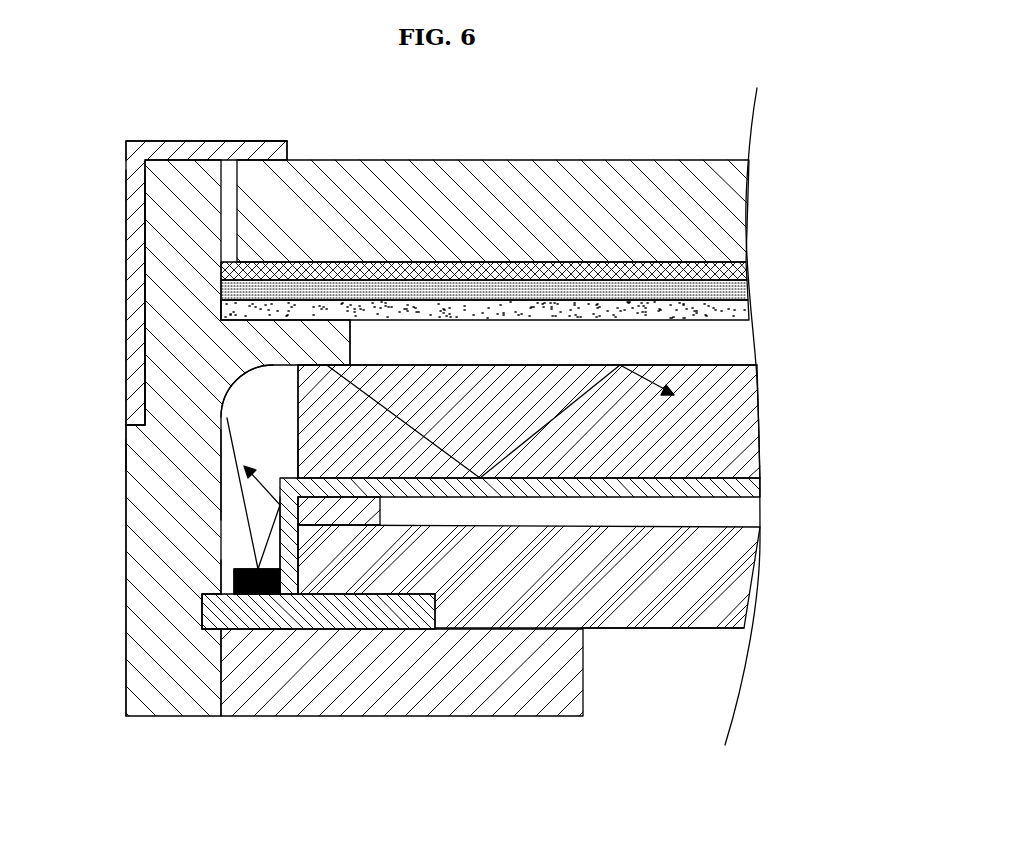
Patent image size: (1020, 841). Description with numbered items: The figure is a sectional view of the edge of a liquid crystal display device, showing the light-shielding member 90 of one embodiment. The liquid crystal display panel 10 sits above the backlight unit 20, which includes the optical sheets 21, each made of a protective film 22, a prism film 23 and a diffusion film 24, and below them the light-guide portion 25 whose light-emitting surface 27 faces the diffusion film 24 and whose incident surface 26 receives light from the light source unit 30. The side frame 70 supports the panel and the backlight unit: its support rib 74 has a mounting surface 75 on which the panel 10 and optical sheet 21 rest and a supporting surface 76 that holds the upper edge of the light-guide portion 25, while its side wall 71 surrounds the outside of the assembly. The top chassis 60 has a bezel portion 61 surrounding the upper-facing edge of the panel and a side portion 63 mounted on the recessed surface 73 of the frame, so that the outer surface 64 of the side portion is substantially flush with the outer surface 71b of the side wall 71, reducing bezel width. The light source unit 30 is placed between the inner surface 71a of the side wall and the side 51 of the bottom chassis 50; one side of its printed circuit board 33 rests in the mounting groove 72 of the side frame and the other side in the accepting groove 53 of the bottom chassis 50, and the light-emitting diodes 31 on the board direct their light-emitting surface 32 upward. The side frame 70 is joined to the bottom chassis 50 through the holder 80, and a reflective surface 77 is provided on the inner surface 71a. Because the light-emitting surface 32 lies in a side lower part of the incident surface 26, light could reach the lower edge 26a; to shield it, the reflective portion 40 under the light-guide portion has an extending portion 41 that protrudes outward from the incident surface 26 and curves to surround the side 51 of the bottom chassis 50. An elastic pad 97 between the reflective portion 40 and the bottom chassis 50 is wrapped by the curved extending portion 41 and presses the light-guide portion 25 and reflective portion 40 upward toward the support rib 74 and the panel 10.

The liquid crystal display panel 10 is at (733, 207).
The backlight unit 20 is at (628, 630).
The optical sheets 21 is at (543, 290).
The protective film 22 is at (747, 268).
The prism film 23 is at (745, 290).
The diffusion film 24 is at (519, 317).
The light-guide portion 25 is at (745, 428).
The incident surface 26 is at (298, 419).
The lower edge of the incident surface 26a is at (298, 466).
The light-emitting surface 27 is at (717, 365).
The light source unit 30 is at (208, 632).
The light-emitting diodes 31 is at (222, 565).
The light-emitting surface 32 is at (204, 608).
The printed circuit board 33 is at (268, 620).
The reflective portion 40 is at (745, 487).
The extending portion 41 is at (228, 569).
The light-shielding member 90 is at (257, 581).
The bottom chassis 50 is at (745, 580).
The side of the bottom chassis 51 is at (292, 560).
The accepting groove 53 is at (412, 600).
The top chassis 60 is at (127, 210).
The bezel portion 61 is at (253, 147).
The side portion 63 is at (137, 238).
The outer surface of the side portion 64 is at (126, 168).
The side frame 70 is at (126, 500).
The side wall 71 is at (145, 440).
The inner surface of the side wall 71a is at (218, 484).
The outer surface of the side wall 71b is at (126, 455).
The mounting groove 72 is at (202, 630).
The recessed surface 73 is at (146, 258).
The support rib 74 is at (338, 344).
The mounting surface 75 is at (243, 318).
The supporting surface 76 is at (346, 372).
The reflective surface 77 is at (233, 413).
The holder 80 is at (468, 707).
The pad 97 is at (340, 530).